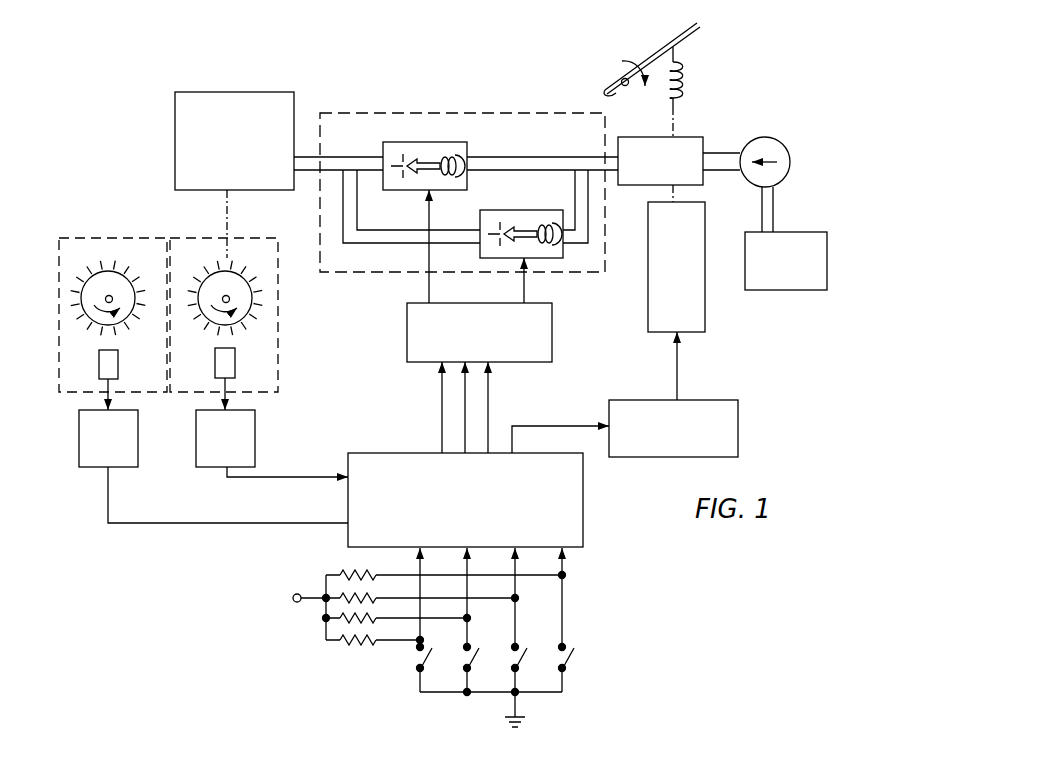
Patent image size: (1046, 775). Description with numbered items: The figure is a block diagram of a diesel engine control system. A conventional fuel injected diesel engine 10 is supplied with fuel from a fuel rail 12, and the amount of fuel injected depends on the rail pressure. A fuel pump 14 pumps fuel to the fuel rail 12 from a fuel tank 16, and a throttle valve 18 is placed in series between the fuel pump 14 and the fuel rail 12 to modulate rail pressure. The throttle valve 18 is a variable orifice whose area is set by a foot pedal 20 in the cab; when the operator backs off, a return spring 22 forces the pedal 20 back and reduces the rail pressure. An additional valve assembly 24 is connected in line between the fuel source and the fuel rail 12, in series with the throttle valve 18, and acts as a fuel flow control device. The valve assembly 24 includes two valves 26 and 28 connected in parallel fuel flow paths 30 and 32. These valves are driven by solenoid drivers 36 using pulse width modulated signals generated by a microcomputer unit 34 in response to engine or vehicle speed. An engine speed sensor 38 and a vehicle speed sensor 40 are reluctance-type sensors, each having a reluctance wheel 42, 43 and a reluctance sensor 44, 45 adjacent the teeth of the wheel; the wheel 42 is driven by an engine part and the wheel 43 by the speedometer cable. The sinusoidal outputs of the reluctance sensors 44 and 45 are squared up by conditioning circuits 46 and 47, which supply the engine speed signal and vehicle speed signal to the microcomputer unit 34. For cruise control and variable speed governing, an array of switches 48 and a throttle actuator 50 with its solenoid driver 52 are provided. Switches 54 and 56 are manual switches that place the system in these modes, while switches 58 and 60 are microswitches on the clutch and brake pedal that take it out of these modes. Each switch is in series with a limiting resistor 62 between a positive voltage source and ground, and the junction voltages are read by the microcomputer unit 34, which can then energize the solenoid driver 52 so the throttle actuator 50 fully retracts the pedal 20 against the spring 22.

The diesel engine 10 is at (282, 92).
The fuel rail 12 is at (305, 150).
The fuel pump 14 is at (777, 147).
The fuel tank 16 is at (815, 232).
The throttle valve 18 is at (687, 143).
The foot pedal 20 is at (690, 43).
The return spring 22 is at (684, 76).
The valve assembly 24 is at (475, 113).
The valve 26 is at (467, 150).
The valve 28 is at (480, 222).
The fuel flow path 30 is at (532, 158).
The fuel flow path 32 is at (380, 227).
The microcomputer unit 34 is at (498, 509).
The solenoid drivers 36 is at (552, 328).
The engine speed sensor 38 is at (278, 330).
The vehicle speed sensor 40 is at (59, 340).
The reluctance wheel 42 is at (226, 294).
The reluctance wheel 43 is at (109, 294).
The reluctance sensor 44 is at (235, 365).
The reluctance sensor 45 is at (118, 366).
The conditioning circuit 46 is at (238, 453).
The conditioning circuit 47 is at (121, 453).
The array of switches 48 is at (482, 646).
The throttle actuator 50 is at (705, 313).
The solenoid driver 52 is at (738, 422).
The switch 54 is at (570, 655).
The switch 56 is at (520, 673).
The switch 58 is at (477, 673).
The switch 60 is at (435, 658).
The limiting resistor 62 is at (358, 647).